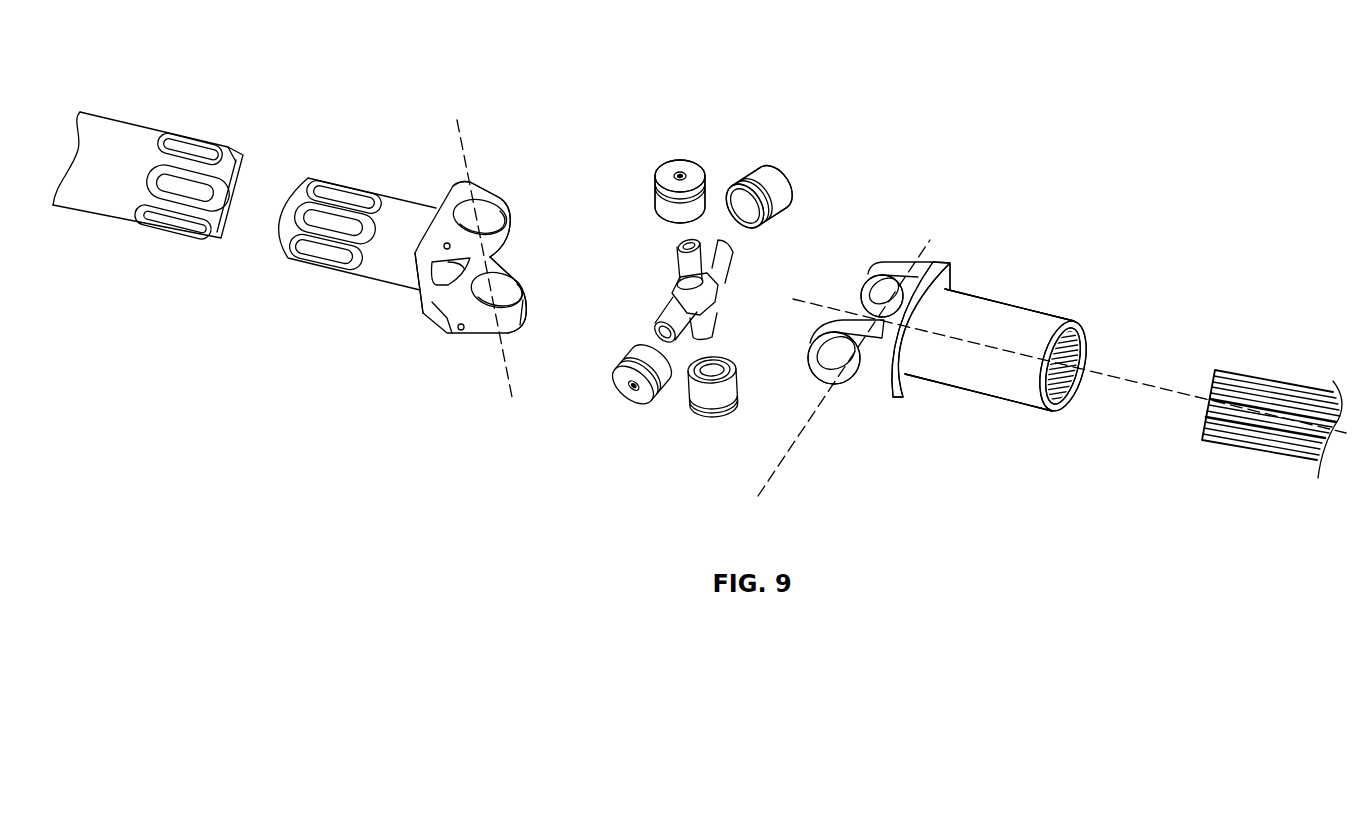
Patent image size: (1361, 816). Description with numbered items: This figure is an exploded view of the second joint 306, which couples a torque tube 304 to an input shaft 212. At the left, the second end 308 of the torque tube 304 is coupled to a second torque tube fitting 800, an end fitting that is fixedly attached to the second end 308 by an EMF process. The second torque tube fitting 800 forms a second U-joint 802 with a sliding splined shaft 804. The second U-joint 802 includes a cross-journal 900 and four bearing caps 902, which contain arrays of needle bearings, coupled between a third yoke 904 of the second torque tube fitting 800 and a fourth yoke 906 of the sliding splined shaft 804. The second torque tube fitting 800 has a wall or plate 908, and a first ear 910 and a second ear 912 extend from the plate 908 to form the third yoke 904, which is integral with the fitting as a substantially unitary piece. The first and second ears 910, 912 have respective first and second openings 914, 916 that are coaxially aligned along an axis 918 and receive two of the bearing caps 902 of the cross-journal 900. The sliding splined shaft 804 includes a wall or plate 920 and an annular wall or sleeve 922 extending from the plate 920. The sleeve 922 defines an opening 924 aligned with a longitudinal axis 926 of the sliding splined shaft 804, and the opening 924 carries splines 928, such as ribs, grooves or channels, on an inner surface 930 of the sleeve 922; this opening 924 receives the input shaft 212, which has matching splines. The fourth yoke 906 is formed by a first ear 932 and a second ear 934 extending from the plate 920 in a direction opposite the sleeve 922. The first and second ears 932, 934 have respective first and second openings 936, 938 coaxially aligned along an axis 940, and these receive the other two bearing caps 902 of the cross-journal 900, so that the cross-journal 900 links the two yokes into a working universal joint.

The input shaft 212 is at (1263, 457).
The torque tube 304 is at (108, 112).
The second joint 306 is at (810, 110).
The second end 308 is at (208, 238).
The second torque tube fitting 800 is at (395, 208).
The second U-joint 802 is at (665, 132).
The sliding splined shaft 804 is at (1000, 298).
The cross-journal 900 is at (675, 293).
The bearing caps 902 is at (688, 170).
The third yoke 904 is at (522, 258).
The fourth yoke 906 is at (845, 302).
The plate 908 is at (427, 294).
The first ear 910 is at (483, 195).
The second ear 912 is at (518, 318).
The first opening 914 is at (503, 203).
The second opening 916 is at (513, 297).
The axis 918 is at (457, 120).
The plate 920 is at (902, 395).
The sleeve 922 is at (1011, 399).
The opening 924 is at (1082, 391).
The longitudinal axis 926 is at (1178, 390).
The splines 928 is at (1073, 401).
The inner surface 930 is at (1085, 352).
The first ear 932 is at (830, 333).
The second ear 934 is at (880, 272).
The first opening 936 is at (839, 383).
The second opening 938 is at (905, 262).
The axis 940 is at (768, 490).